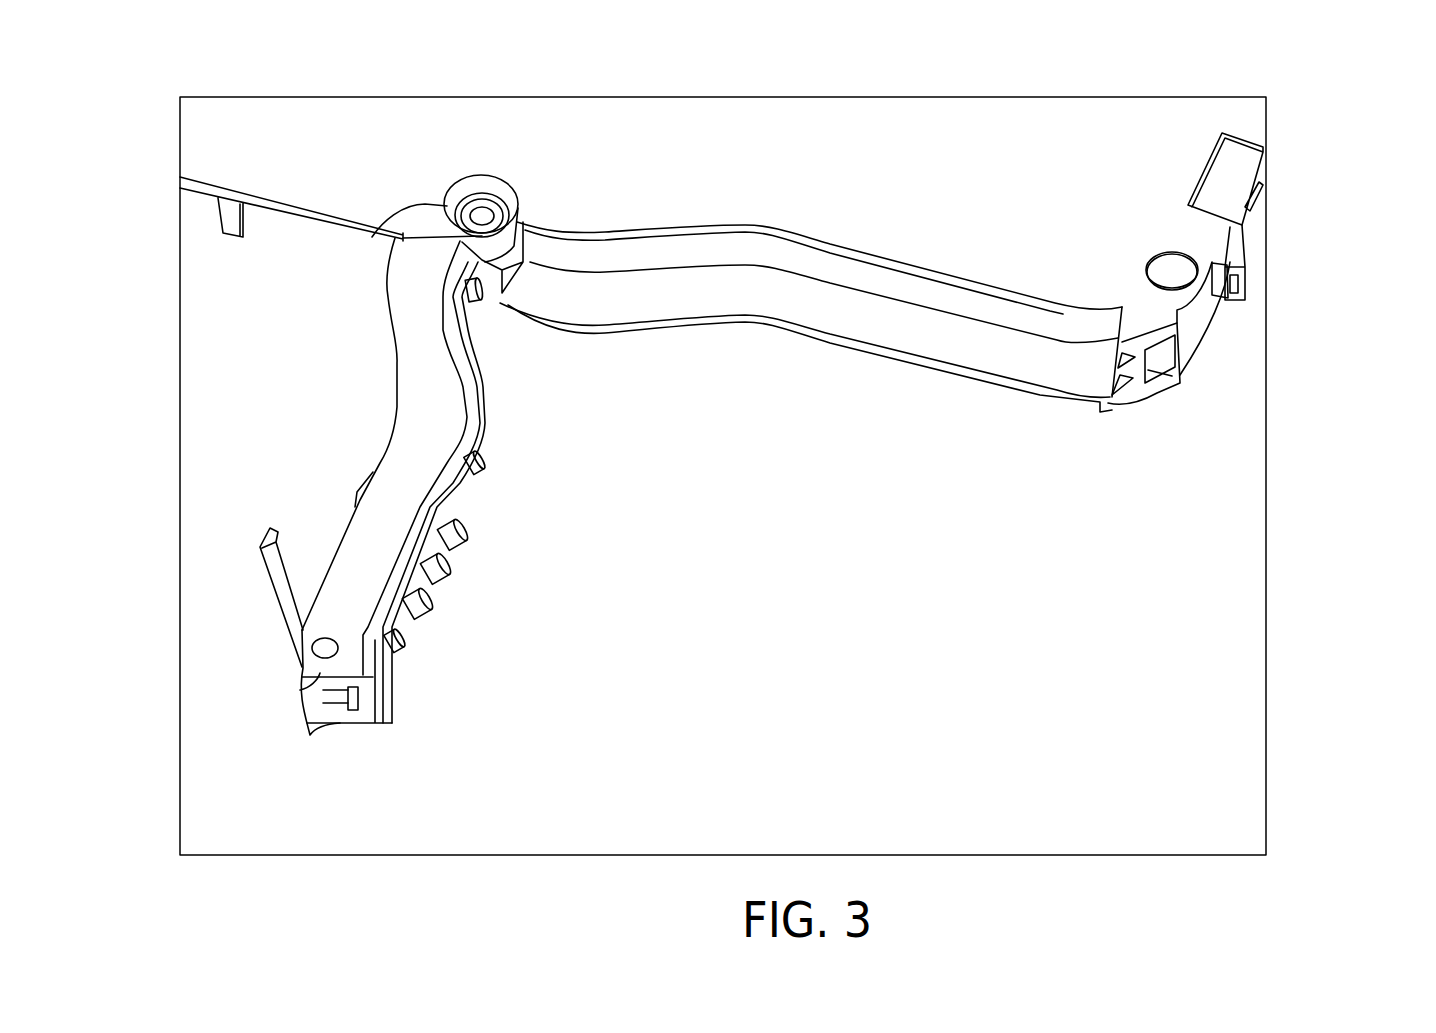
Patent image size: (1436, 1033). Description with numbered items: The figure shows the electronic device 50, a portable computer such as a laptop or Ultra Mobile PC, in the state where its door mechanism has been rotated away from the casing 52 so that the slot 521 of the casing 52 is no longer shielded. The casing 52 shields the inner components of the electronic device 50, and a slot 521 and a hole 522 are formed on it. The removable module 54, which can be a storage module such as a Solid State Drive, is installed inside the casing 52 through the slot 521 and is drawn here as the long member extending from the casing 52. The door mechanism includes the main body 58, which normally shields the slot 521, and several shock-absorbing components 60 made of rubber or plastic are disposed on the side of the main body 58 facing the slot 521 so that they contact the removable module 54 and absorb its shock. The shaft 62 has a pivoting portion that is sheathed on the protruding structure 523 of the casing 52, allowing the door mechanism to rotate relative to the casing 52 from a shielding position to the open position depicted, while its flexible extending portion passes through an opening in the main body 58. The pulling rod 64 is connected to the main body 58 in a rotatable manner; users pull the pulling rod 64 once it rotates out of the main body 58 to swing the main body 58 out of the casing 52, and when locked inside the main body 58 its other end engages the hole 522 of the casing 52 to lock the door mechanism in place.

The electronic device 50 is at (1290, 132).
The casing 52 is at (1212, 320).
The slot 521 is at (1028, 372).
The hole 522 is at (1162, 379).
The protruding structure 523 is at (382, 232).
The removable module 54 is at (878, 278).
The main body 58 is at (380, 400).
The shock-absorbing component 60 is at (420, 613).
The shaft 62 is at (505, 185).
The pulling rod 64 is at (270, 593).